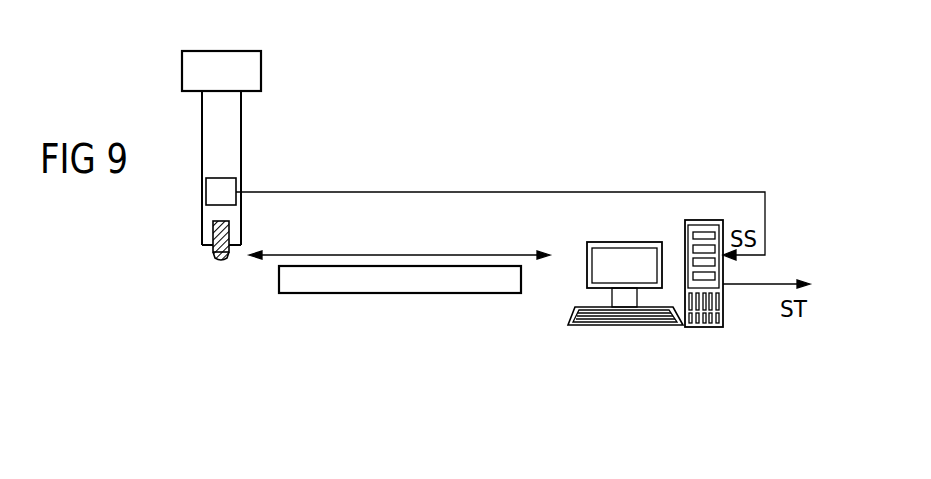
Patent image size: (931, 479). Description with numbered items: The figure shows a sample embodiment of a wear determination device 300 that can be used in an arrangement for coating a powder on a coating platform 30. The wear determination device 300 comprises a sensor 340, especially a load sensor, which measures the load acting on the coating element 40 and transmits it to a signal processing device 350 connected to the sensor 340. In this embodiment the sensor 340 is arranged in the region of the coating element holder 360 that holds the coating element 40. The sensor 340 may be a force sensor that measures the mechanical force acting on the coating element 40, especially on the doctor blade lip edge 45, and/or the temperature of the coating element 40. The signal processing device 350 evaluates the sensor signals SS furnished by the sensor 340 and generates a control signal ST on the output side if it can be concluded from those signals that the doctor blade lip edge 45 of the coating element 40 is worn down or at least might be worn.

The wear determination device 300 is at (648, 98).
The coating element holder 360 is at (242, 73).
The sensor 340 is at (220, 180).
The coating element 40 is at (205, 233).
The doctor blade lip edge 45 is at (215, 266).
The coating platform 30 is at (405, 287).
The signal processing device 350 is at (707, 325).